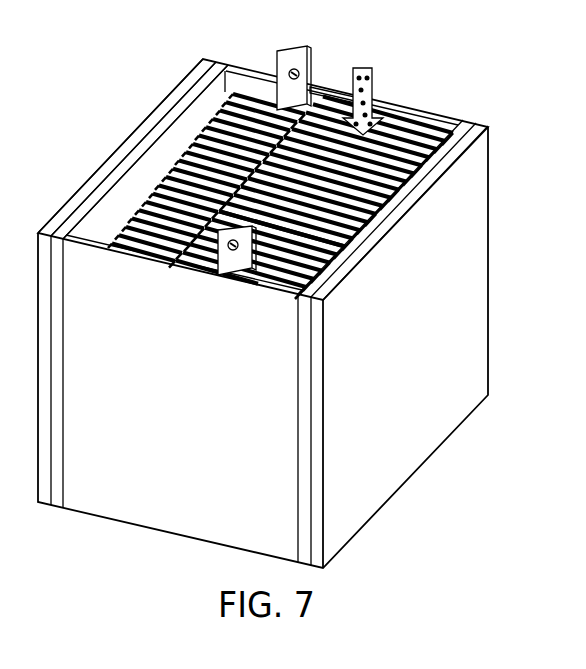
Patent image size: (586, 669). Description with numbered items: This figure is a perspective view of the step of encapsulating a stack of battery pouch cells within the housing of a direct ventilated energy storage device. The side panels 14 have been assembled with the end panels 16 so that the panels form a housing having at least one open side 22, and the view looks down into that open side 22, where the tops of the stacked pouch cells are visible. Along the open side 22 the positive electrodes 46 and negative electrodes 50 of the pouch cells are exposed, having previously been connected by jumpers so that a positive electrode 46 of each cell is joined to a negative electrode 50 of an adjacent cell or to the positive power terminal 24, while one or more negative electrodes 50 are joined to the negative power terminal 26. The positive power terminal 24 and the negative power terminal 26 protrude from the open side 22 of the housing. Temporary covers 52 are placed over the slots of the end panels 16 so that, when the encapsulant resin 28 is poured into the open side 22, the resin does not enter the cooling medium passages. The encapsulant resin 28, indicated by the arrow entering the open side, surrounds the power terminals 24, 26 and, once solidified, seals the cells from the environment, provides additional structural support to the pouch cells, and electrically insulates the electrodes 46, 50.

The side panels 14 is at (328, 88).
The end panels 16 is at (58, 438).
The open side 22 is at (173, 131).
The positive power terminal 24 is at (240, 258).
The negative power terminal 26 is at (277, 62).
The encapsulant resin 28 is at (375, 82).
The positive electrode 46 is at (318, 234).
The negative electrode 50 is at (255, 95).
The temporary covers 52 is at (78, 195).